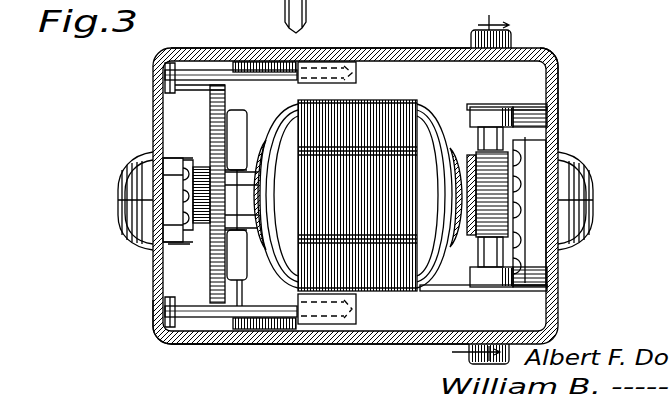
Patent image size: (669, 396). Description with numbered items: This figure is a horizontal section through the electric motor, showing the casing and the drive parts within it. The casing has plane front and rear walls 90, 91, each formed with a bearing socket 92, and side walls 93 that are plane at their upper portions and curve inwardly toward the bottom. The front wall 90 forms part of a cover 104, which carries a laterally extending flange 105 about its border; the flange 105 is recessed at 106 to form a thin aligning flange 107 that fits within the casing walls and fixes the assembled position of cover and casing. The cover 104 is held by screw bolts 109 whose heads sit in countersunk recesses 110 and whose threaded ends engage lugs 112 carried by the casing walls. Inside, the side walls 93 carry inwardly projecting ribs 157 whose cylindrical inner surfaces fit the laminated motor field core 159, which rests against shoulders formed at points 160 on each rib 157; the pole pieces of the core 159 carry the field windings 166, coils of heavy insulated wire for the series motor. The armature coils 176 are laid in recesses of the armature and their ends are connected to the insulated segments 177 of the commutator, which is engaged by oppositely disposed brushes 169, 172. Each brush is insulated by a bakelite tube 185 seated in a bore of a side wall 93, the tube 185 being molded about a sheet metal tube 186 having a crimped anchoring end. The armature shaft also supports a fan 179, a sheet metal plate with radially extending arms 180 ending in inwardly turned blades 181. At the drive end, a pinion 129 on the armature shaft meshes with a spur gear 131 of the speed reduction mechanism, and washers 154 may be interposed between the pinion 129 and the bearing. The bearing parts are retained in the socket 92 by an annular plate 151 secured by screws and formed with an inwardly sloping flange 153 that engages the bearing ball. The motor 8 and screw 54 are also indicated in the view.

The motor 8 is at (467, 185).
The screw 54 is at (308, 16).
The front wall 90 is at (152, 277).
The rear wall 91 is at (556, 90).
The bearing socket 92 is at (137, 217).
The side wall 93 is at (386, 48).
The cover 104 is at (155, 107).
The flange 105 is at (205, 48).
The recess 106 is at (217, 342).
The aligning flange 107 is at (250, 341).
The screw bolt 109 is at (255, 50).
The countersunk recess 110 is at (290, 307).
The lug 112 is at (352, 70).
The pinion 129 is at (187, 204).
The spur gear 131 is at (213, 100).
The annular plate 151 is at (167, 154).
The inwardly sloping flange 153 is at (559, 175).
The washers 154 is at (187, 182).
The rib 157 is at (533, 80).
The motor field core 159 is at (397, 95).
The shoulder point 160 is at (413, 107).
The field winding 166 is at (467, 112).
The brush 169 is at (559, 252).
The brush 172 is at (503, 154).
The armature coil 176 is at (248, 268).
The commutator segment 177 is at (556, 222).
The fan 179 is at (153, 260).
The radially extending arm 180 is at (200, 128).
The blade 181 is at (175, 68).
The bakelite tube 185 is at (513, 37).
The sheet metal tube 186 is at (505, 135).